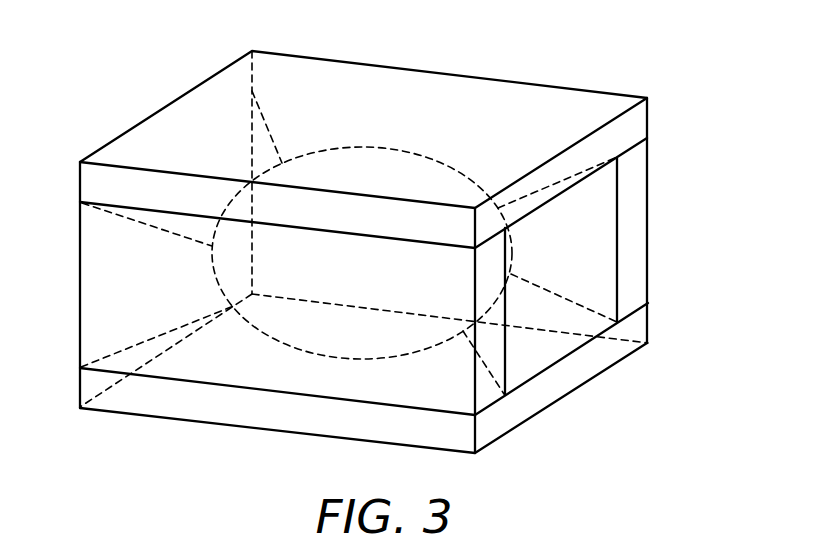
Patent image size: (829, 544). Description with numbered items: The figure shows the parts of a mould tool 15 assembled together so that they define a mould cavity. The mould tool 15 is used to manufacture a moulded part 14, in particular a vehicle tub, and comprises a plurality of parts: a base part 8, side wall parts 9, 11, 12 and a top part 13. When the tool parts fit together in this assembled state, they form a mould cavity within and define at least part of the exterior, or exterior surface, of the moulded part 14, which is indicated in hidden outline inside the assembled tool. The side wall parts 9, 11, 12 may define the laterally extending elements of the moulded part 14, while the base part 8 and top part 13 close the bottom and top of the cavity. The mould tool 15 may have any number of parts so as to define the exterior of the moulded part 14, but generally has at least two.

The base part 8 is at (582, 373).
The side wall part 9 is at (222, 363).
The side wall part 11 is at (637, 189).
The side wall part 12 is at (597, 252).
The top part 13 is at (297, 70).
The moulded part 14 is at (398, 163).
The mould tool 15 is at (117, 131).